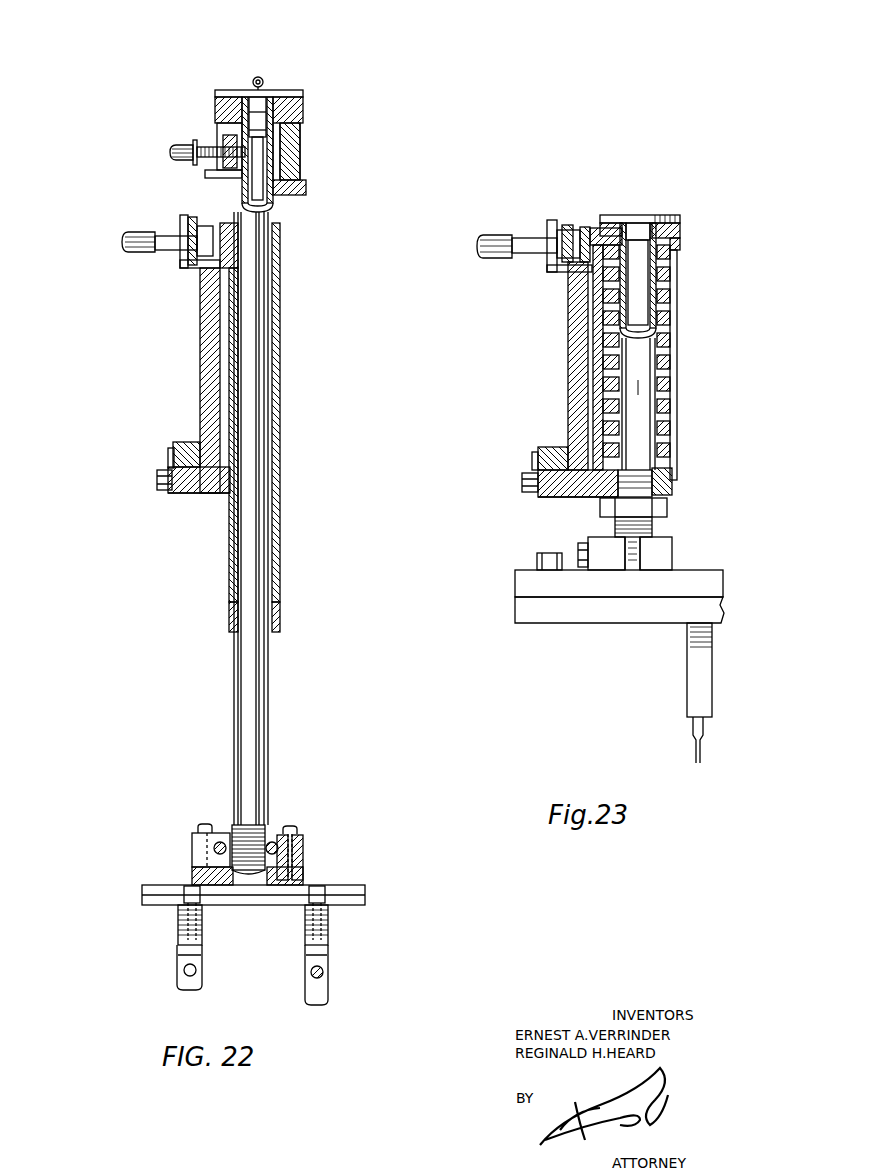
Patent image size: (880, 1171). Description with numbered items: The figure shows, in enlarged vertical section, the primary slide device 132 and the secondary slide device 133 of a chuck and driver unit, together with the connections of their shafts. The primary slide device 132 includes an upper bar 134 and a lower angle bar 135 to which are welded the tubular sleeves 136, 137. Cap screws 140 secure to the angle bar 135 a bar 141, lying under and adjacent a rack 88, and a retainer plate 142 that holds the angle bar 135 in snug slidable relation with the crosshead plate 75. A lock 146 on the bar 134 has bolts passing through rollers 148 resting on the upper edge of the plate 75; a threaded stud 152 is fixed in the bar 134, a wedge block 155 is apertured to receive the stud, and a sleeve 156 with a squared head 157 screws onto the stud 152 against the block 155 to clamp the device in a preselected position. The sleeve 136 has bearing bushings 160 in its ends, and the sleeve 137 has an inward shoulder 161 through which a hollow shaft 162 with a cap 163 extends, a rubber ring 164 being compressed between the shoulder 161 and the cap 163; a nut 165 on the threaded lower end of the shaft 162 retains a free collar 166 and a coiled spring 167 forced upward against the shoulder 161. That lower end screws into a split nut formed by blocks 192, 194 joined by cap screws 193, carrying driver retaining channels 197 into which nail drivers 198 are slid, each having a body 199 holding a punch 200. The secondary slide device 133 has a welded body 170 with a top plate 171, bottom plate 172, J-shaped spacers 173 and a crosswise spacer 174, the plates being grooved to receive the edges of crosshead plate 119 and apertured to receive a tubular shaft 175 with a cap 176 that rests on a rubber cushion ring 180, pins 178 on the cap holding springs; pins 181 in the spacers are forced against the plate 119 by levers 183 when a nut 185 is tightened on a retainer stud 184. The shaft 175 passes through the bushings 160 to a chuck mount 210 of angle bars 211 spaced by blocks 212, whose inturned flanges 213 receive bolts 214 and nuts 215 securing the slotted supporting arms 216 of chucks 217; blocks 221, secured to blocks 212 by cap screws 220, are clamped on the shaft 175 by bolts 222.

In FIG. 22, the crosshead plate 75 is at (208, 330).
In FIG. 23, the crosshead plate 75 is at (575, 330).
In FIG. 22, the rack 88 is at (187, 444).
In FIG. 23, the rack 88 is at (550, 447).
In FIG. 22, the crosshead plate 119 is at (300, 168).
In FIG. 22, the primary slide device 132 is at (320, 325).
In FIG. 23, the primary slide device 132 is at (696, 292).
In FIG. 22, the secondary slide device 133 is at (157, 159).
In FIG. 22, the upper bar 134 is at (228, 222).
In FIG. 23, the upper bar 134 is at (603, 228).
In FIG. 22, the lower angle bar 135 is at (214, 492).
In FIG. 23, the lower angle bar 135 is at (578, 496).
In FIG. 22, the tubular sleeve 136 is at (281, 590).
In FIG. 23, the tubular sleeve 137 is at (675, 375).
In FIG. 22, the cap screw 140 is at (157, 480).
In FIG. 23, the cap screw 140 is at (526, 478).
In FIG. 22, the bar 141 is at (177, 493).
In FIG. 23, the bar 141 is at (545, 497).
In FIG. 22, the retainer plate 142 is at (170, 453).
In FIG. 23, the retainer plate 142 is at (535, 460).
In FIG. 22, the lock 146 is at (146, 255).
In FIG. 23, the lock 146 is at (512, 242).
In FIG. 23, the roller 148 is at (584, 232).
In FIG. 22, the threaded stud 152 is at (210, 265).
In FIG. 23, the threaded stud 152 is at (580, 265).
In FIG. 22, the wedge block 155 is at (199, 255).
In FIG. 23, the wedge block 155 is at (567, 240).
In FIG. 22, the sleeve 156 is at (160, 238).
In FIG. 23, the sleeve 156 is at (535, 253).
In FIG. 22, the squared head 157 is at (128, 238).
In FIG. 23, the squared head 157 is at (490, 250).
In FIG. 22, the bearing bushing 160 is at (283, 232).
In FIG. 23, the shoulder 161 is at (680, 245).
In FIG. 23, the hollow shaft 162 is at (640, 385).
In FIG. 23, the cap 163 is at (680, 218).
In FIG. 23, the rubber ring 164 is at (680, 230).
In FIG. 23, the nut 165 is at (662, 508).
In FIG. 23, the free collar 166 is at (672, 485).
In FIG. 23, the coiled spring 167 is at (670, 410).
In FIG. 22, the body 170 is at (273, 154).
In FIG. 22, the top plate 171 is at (305, 118).
In FIG. 22, the bottom plate 172 is at (306, 187).
In FIG. 22, the J-shaped spacer 173 is at (240, 123).
In FIG. 22, the crosswise spacer 174 is at (218, 130).
In FIG. 22, the tubular shaft 175 is at (272, 212).
In FIG. 22, the cap 176 is at (303, 92).
In FIG. 22, the pin 178 is at (258, 77).
In FIG. 22, the rubber cushion ring 180 is at (303, 105).
In FIG. 22, the pin 181 is at (290, 150).
In FIG. 22, the lever 183 is at (225, 150).
In FIG. 22, the threaded retainer stud 184 is at (215, 152).
In FIG. 22, the nut 185 is at (180, 160).
In FIG. 23, the block 192 is at (620, 572).
In FIG. 23, the cap screw 193 is at (578, 548).
In FIG. 23, the block 194 is at (668, 548).
In FIG. 23, the driver retaining channel 197 is at (520, 612).
In FIG. 23, the nail driver 198 is at (665, 693).
In FIG. 23, the driver body 199 is at (690, 652).
In FIG. 23, the punch 200 is at (692, 728).
In FIG. 22, the chuck mount 210 is at (253, 889).
In FIG. 22, the angle bar 211 is at (365, 893).
In FIG. 22, the block 212 is at (192, 875).
In FIG. 22, the inturned flange 213 is at (365, 903).
In FIG. 22, the bolt 214 is at (180, 945).
In FIG. 22, the nut 215 is at (327, 890).
In FIG. 22, the supporting arm 216 is at (178, 920).
In FIG. 22, the chuck 217 is at (192, 985).
In FIG. 22, the cap screw 220 is at (206, 827).
In FIG. 22, the block 221 is at (194, 845).
In FIG. 22, the bolt 222 is at (218, 842).